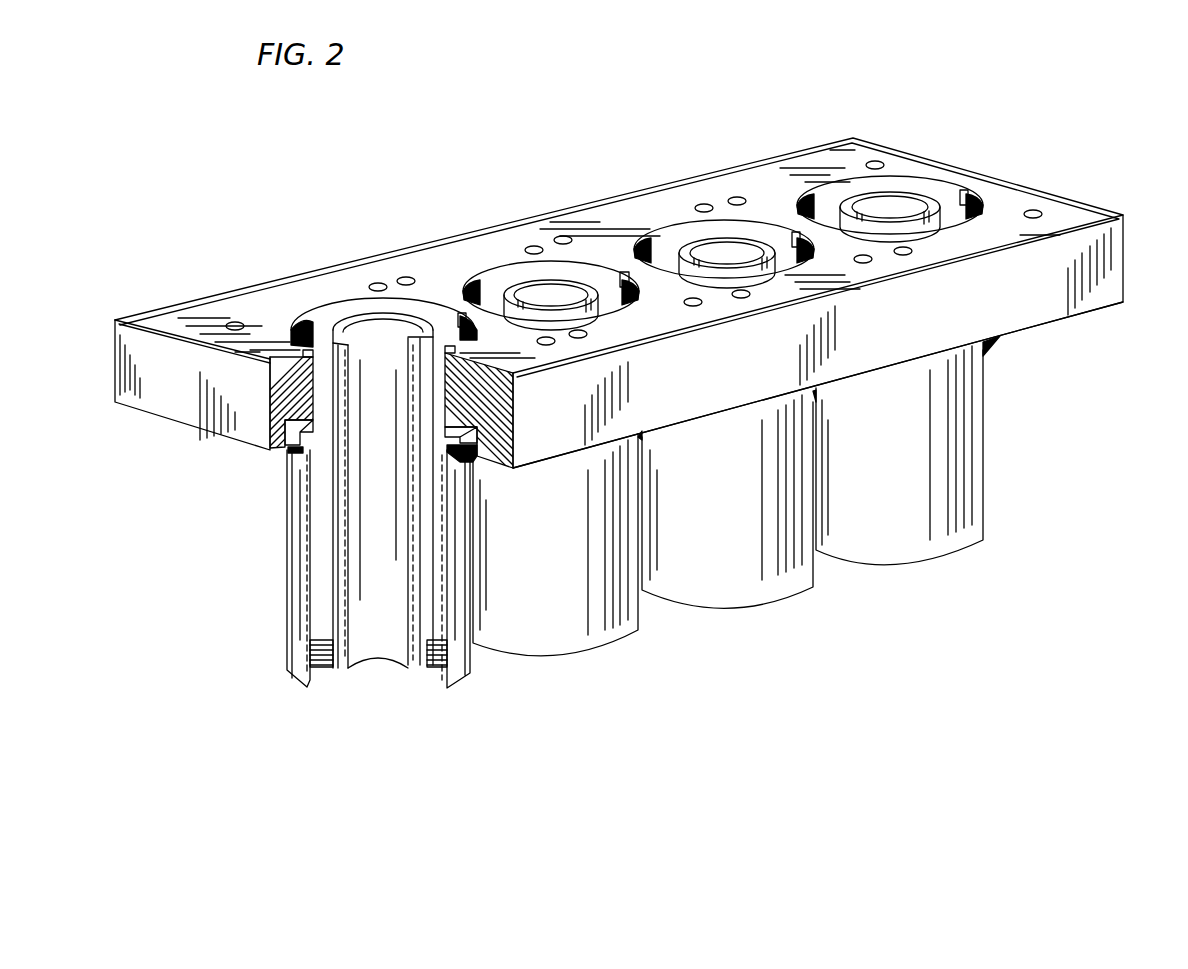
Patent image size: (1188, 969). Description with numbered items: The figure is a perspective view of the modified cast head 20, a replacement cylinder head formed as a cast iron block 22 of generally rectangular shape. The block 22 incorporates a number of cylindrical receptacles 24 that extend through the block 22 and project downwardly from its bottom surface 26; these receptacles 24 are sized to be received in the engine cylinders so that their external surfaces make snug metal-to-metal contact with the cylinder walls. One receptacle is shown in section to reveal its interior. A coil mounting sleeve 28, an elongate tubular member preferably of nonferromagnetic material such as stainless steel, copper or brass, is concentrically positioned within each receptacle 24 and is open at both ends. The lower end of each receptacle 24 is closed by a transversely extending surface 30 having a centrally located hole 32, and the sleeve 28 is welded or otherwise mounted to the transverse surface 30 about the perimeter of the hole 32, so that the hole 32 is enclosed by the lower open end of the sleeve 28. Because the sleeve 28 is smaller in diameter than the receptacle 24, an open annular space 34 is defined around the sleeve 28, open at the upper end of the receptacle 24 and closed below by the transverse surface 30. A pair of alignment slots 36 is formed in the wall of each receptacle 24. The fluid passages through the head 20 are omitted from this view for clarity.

The modified cast head 20 is at (930, 97).
The cast iron block 22 is at (1097, 280).
The cylindrical receptacles 24 is at (295, 605).
The bottom surface 26 is at (1023, 330).
The coil mounting sleeve 28 is at (363, 323).
The transversely extending surface 30 is at (433, 670).
The centrally located hole 32 is at (370, 665).
The open annular space 34 is at (305, 350).
The alignment slots 36 is at (813, 227).